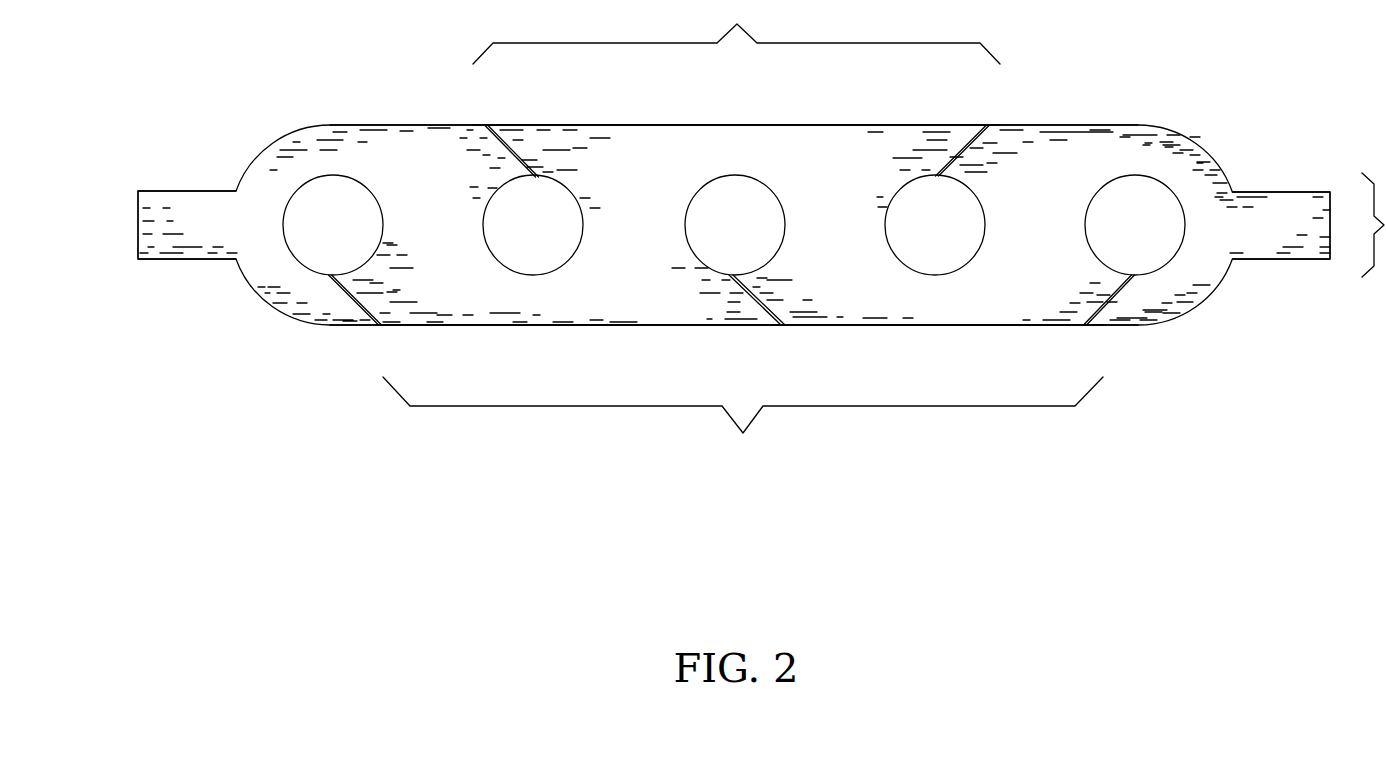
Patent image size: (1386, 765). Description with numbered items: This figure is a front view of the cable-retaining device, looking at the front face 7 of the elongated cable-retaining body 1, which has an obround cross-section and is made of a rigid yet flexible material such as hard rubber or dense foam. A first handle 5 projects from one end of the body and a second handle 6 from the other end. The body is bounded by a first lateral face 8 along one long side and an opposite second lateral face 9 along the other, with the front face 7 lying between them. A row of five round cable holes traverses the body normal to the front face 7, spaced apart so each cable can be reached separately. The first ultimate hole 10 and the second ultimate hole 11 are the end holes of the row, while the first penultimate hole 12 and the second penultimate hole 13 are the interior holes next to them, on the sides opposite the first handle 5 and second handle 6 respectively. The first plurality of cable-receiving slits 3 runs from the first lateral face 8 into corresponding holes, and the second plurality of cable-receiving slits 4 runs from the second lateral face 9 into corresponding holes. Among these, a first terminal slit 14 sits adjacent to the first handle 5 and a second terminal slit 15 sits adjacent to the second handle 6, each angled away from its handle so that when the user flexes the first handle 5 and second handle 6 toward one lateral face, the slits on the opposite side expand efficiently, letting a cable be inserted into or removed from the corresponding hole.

The elongated cable-retaining body 1 is at (343, 54).
The first plurality of cable-receiving slits 3 is at (743, 399).
The second plurality of cable-receiving slits 4 is at (736, 62).
The first handle 5 is at (192, 242).
The second handle 6 is at (1268, 236).
The front face 7 is at (973, 305).
The first lateral face 8 is at (685, 327).
The second lateral face 9 is at (739, 125).
The first ultimate hole 10 is at (348, 204).
The second ultimate hole 11 is at (1113, 210).
The first penultimate hole 12 is at (556, 252).
The second penultimate hole 13 is at (917, 252).
The first terminal slit 14 is at (485, 121).
The second terminal slit 15 is at (991, 121).